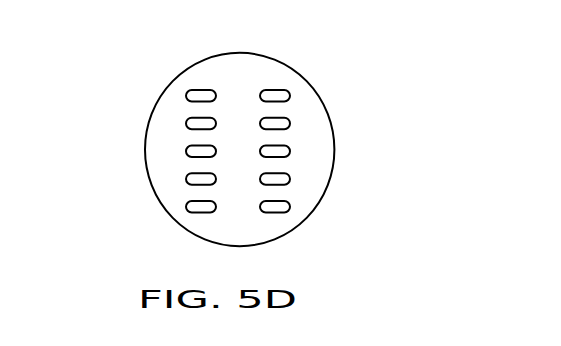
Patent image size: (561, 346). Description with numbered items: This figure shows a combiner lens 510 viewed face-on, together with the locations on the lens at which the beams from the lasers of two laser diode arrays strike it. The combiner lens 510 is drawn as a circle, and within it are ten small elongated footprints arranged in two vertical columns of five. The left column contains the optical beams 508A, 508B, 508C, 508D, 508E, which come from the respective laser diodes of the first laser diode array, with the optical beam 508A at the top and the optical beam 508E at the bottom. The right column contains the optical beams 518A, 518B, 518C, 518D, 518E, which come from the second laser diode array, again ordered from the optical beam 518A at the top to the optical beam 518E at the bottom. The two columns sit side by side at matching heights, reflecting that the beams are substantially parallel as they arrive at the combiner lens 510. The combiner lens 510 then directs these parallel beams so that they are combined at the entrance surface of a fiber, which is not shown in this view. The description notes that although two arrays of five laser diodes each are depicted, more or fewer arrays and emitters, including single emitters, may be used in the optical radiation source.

The combiner lens 510 is at (287, 66).
The optical beam 508A is at (190, 95).
The optical beam 508B is at (190, 122).
The optical beam 508C is at (190, 149).
The optical beam 508D is at (190, 178).
The optical beam 508E is at (190, 206).
The optical beam 518A is at (286, 95).
The optical beam 518B is at (286, 124).
The optical beam 518C is at (286, 152).
The optical beam 518D is at (286, 180).
The optical beam 518E is at (286, 208).